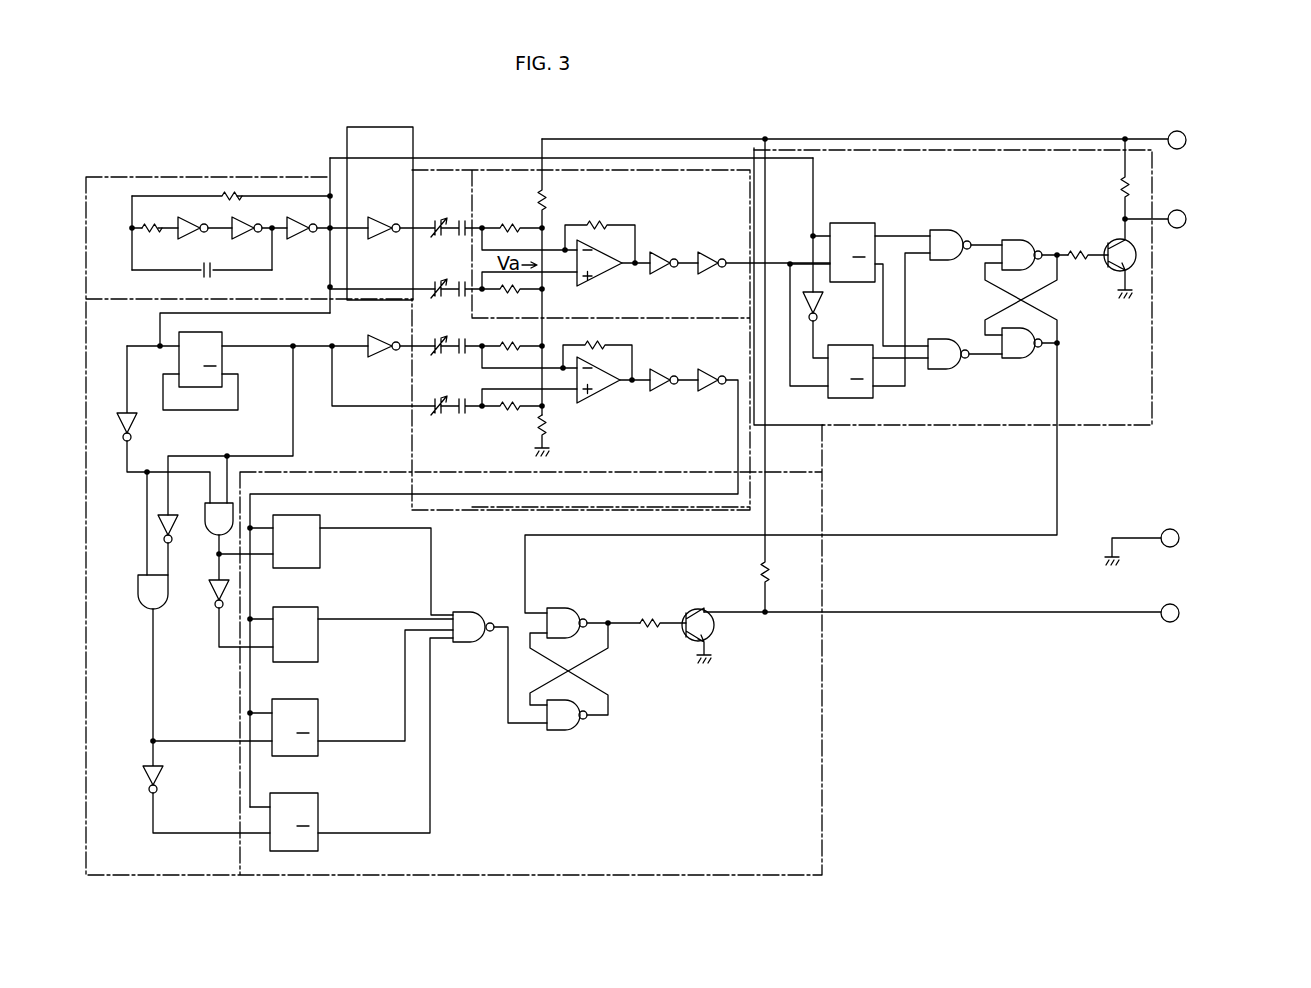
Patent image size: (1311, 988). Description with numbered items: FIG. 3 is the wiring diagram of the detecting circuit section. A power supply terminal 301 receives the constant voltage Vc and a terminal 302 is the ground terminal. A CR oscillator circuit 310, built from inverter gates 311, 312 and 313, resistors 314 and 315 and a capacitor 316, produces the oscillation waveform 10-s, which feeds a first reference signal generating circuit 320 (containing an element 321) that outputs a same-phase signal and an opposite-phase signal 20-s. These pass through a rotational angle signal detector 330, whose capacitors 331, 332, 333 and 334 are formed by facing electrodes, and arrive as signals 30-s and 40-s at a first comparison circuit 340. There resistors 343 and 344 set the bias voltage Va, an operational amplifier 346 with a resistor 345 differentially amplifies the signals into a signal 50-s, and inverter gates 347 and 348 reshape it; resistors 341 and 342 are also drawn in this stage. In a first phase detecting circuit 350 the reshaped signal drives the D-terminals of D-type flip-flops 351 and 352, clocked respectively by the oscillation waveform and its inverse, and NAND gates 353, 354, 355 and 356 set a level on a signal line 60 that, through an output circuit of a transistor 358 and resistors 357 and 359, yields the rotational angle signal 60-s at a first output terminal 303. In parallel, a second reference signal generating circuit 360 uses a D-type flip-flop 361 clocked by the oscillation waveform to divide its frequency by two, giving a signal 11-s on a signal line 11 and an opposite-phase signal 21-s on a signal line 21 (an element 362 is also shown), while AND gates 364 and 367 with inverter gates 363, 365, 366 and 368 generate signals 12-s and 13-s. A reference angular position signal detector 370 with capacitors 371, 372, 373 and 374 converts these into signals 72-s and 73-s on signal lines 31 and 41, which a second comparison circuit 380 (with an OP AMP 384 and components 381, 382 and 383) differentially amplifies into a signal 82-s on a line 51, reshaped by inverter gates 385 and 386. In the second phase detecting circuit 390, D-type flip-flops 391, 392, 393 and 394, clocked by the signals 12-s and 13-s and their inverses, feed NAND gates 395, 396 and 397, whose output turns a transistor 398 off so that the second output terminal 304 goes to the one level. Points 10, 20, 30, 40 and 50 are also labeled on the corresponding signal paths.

The power supply terminal 301 is at (1186, 146).
The ground terminal 302 is at (1167, 528).
The first output terminal 303 is at (1184, 226).
The second output terminal 304 is at (1167, 604).
The CR oscillator circuit 310 is at (255, 177).
The inverter gate 311 is at (180, 205).
The inverter gate 312 is at (236, 205).
The inverter gate 313 is at (298, 238).
The resistor 314 is at (226, 192).
The resistor 315 is at (153, 234).
The capacitor 316 is at (206, 268).
The first reference signal generating circuit 320 is at (393, 124).
The inverter 321 is at (376, 216).
The rotational angle signal detector 330 is at (452, 165).
The capacitor 331 is at (436, 280).
The capacitor 332 is at (462, 297).
The capacitor 333 is at (436, 218).
The capacitor 334 is at (463, 216).
The first comparison circuit 340 is at (712, 170).
The resistor 341 is at (508, 224).
The resistor 342 is at (510, 296).
The resistor 343 is at (546, 195).
The resistor 344 is at (546, 432).
The resistor 345 is at (603, 226).
The operational amplifier 346 is at (602, 276).
The inverter gate 347 is at (670, 250).
The inverter gate 348 is at (713, 255).
The first phase detecting circuit 350 is at (972, 152).
The D-type flip-flop 351 is at (852, 223).
The D-type flip-flop 352 is at (846, 345).
The NAND gate 353 is at (952, 260).
The NAND gate 354 is at (946, 338).
The NAND gate 355 is at (1012, 238).
The NAND gate 356 is at (1016, 360).
The resistor 357 is at (1082, 263).
The transistor 358 is at (1137, 256).
The resistor 359 is at (1120, 182).
The second reference signal generating circuit 360 is at (352, 470).
The D-type flip-flop 361 is at (222, 338).
The inverter 362 is at (380, 356).
The inverter gate 363 is at (134, 426).
The AND gate 364 is at (236, 512).
The inverter gate 365 is at (174, 512).
The inverter gate 366 is at (210, 592).
The AND gate 367 is at (136, 592).
The inverter gate 368 is at (160, 780).
The reference angular position signal detector 370 is at (460, 470).
The capacitor 371 is at (428, 417).
The capacitor 372 is at (463, 414).
The capacitor 373 is at (425, 335).
The capacitor 374 is at (462, 355).
The second comparison circuit 380 is at (645, 500).
The resistor 381 is at (502, 344).
The resistor 382 is at (505, 412).
The feedback resistor 383 is at (600, 340).
The operational amplifier 384 is at (606, 398).
The inverter gate 385 is at (661, 372).
The inverter gate 386 is at (710, 392).
The second phase detecting circuit 390 is at (663, 872).
The D-type flip-flop 391 is at (320, 558).
The D-type flip-flop 392 is at (320, 640).
The D-type flip-flop 393 is at (318, 710).
The D-type flip-flop 394 is at (316, 805).
The NAND gate 395 is at (468, 610).
The NAND gate 396 is at (565, 610).
The NAND gate 397 is at (573, 732).
The transistor 398 is at (712, 636).
The oscillator output node 10 is at (318, 219).
The inverted oscillator node 20 is at (398, 218).
The comparator input node 30 is at (560, 270).
The comparator input node 40 is at (555, 248).
The comparator output node 50 is at (640, 262).
The signal line 60 is at (1062, 250).
The signal line 11 is at (276, 350).
The signal line 21 is at (406, 390).
The signal line 31 is at (488, 408).
The signal line 41 is at (528, 366).
The line 51 is at (636, 385).
The oscillation waveform 10-s is at (322, 192).
The opposite-phase signal 20-s is at (396, 236).
The frequency-divided signal 11-s is at (302, 344).
The opposite-phase signal 21-s is at (383, 387).
The clock signal 12-s is at (206, 557).
The clock signal 13-s is at (167, 713).
The detected signal 30-s is at (591, 310).
The detected signal 40-s is at (594, 210).
The differential amplifier output signal 50-s is at (678, 258).
The rotational angle signal 60-s is at (1194, 197).
The detected signal 72-s is at (558, 399).
The detected signal 73-s is at (556, 357).
The second comparison output signal 82-s is at (646, 374).